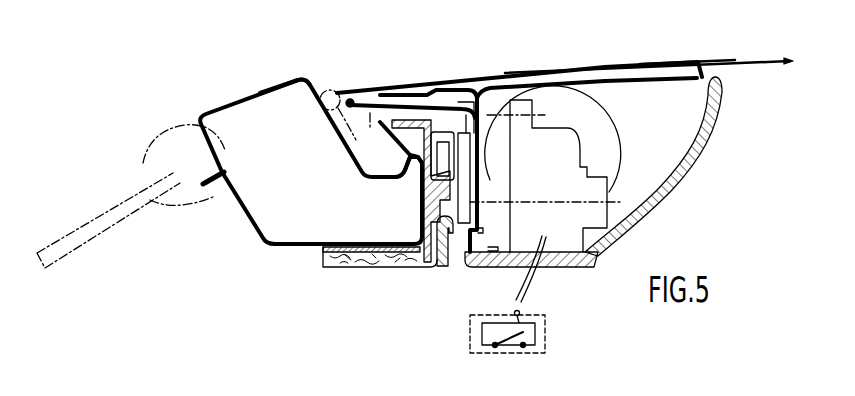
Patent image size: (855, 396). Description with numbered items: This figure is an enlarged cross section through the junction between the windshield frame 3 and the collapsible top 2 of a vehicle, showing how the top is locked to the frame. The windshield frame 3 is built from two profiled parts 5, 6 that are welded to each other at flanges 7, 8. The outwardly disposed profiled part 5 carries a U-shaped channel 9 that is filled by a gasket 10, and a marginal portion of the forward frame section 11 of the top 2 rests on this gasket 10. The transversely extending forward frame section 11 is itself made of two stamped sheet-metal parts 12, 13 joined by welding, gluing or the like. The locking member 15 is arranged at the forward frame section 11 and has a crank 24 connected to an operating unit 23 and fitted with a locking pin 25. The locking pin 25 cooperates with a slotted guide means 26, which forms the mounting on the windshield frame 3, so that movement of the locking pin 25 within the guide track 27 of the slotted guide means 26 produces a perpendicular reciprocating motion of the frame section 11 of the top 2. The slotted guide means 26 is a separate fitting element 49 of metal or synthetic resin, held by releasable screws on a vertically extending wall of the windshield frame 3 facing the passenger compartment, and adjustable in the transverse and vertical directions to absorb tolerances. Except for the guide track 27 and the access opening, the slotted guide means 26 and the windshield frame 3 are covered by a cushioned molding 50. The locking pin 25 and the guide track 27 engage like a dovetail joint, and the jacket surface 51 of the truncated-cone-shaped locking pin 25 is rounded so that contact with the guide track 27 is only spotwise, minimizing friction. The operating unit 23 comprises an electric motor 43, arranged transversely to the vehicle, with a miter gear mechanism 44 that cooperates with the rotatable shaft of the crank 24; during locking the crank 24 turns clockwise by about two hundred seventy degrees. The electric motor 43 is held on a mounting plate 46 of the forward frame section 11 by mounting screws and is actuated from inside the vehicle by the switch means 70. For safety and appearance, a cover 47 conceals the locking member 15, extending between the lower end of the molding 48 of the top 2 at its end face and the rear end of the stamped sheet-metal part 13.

The collapsible top 2 is at (587, 70).
The windshield frame 3 is at (245, 115).
The profiled part 5 is at (287, 82).
The profiled part 6 is at (300, 249).
The flange 7 is at (218, 192).
The flange 8 is at (380, 180).
The U-shaped channel 9 is at (362, 146).
The gasket 10 is at (370, 110).
The forward frame section 11 is at (408, 75).
The stamped sheet-metal part 12 is at (500, 85).
The stamped sheet-metal part 13 is at (647, 79).
The locking member 15 is at (596, 240).
The operating unit 23 is at (634, 158).
The crank 24 is at (478, 207).
The locking pin 25 is at (446, 88).
The slotted guide means 26 is at (407, 267).
The guide track 27 is at (484, 80).
The electric motor 43 is at (592, 122).
The gear mechanism 44 is at (558, 235).
The mounting plate 46 is at (478, 143).
The cover 47 is at (653, 204).
The molding 48 is at (468, 240).
The fitting element 49 is at (414, 203).
The cushioned molding 50 is at (428, 228).
The jacket surface 51 is at (478, 183).
The switch means 70 is at (547, 352).